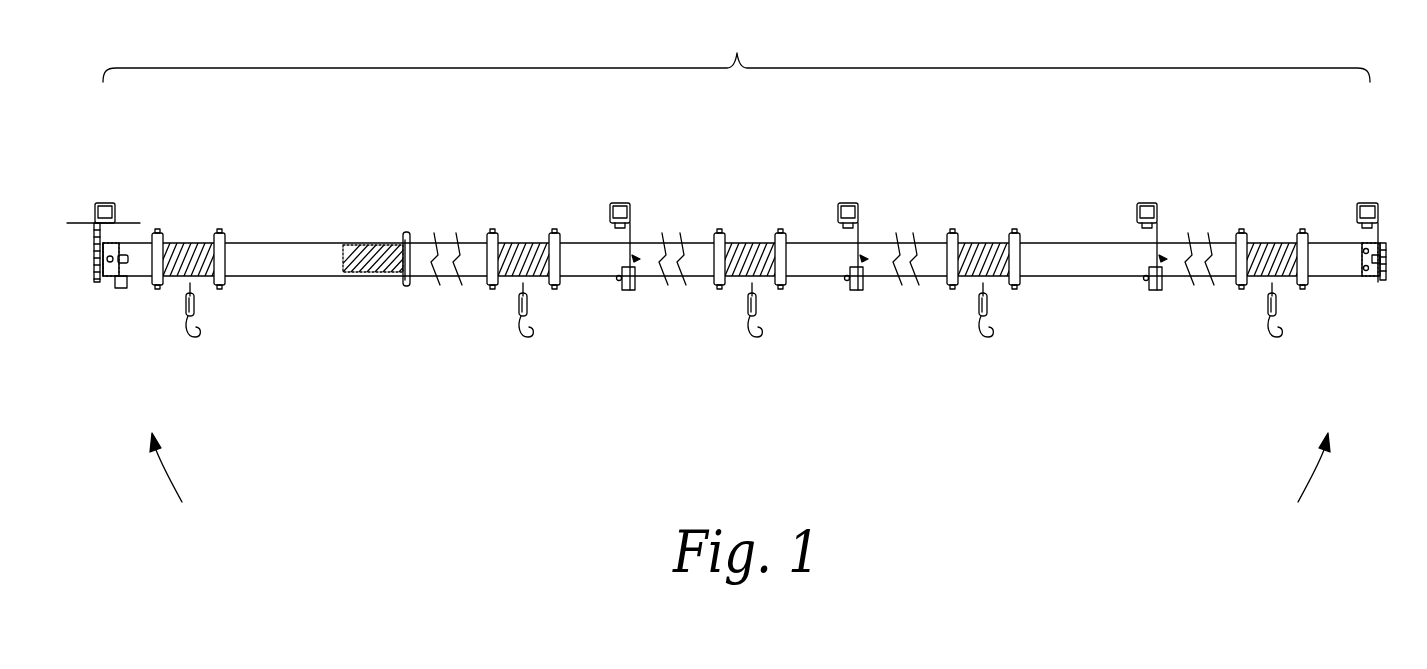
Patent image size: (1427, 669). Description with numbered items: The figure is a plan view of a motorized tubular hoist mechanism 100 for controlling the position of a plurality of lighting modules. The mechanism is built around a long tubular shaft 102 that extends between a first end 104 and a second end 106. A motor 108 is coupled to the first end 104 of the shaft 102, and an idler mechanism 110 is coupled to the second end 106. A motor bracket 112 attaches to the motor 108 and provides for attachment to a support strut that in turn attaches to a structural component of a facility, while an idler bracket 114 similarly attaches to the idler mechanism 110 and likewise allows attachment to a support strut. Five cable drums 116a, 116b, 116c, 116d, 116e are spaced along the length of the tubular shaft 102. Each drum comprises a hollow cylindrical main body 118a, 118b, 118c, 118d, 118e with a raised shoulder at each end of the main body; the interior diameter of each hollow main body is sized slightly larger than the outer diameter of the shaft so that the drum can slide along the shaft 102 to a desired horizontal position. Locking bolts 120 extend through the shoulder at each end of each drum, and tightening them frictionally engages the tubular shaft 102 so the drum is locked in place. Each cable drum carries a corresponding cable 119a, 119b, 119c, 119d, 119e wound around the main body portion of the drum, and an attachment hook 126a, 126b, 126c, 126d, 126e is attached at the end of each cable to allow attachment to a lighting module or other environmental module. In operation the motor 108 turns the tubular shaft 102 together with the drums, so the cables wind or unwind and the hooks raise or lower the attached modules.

The motorized tubular hoist mechanism 100 is at (736, 48).
The tubular shaft 102 is at (298, 275).
The first end 104 is at (186, 486).
The second end 106 is at (1292, 486).
The motor 108 is at (138, 270).
The idler mechanism 110 is at (1375, 282).
The motor bracket 112 is at (95, 248).
The idler bracket 114 is at (1385, 240).
The cable drum 116a is at (212, 285).
The cable drum 116b is at (556, 287).
The cable drum 116c is at (779, 287).
The cable drum 116d is at (1015, 287).
The cable drum 116e is at (1302, 287).
The hollow cylindrical main body 118a is at (178, 243).
The hollow cylindrical main body 118b is at (518, 243).
The hollow cylindrical main body 118c is at (748, 243).
The hollow cylindrical main body 118d is at (970, 243).
The hollow cylindrical main body 118e is at (1254, 243).
The cable 119a is at (190, 235).
The second collar of hanger section b 119b is at (542, 233).
The second collar of hanger section c 119c is at (723, 287).
The second collar of hanger section d 119d is at (953, 287).
The second collar of hanger section e 119e is at (1241, 287).
The locking bolts 120 is at (157, 230).
The attachment hook 126a is at (190, 339).
The attachment hook 126b is at (523, 340).
The attachment hook 126c is at (752, 340).
The attachment hook 126d is at (983, 340).
The attachment hook 126e is at (1272, 340).